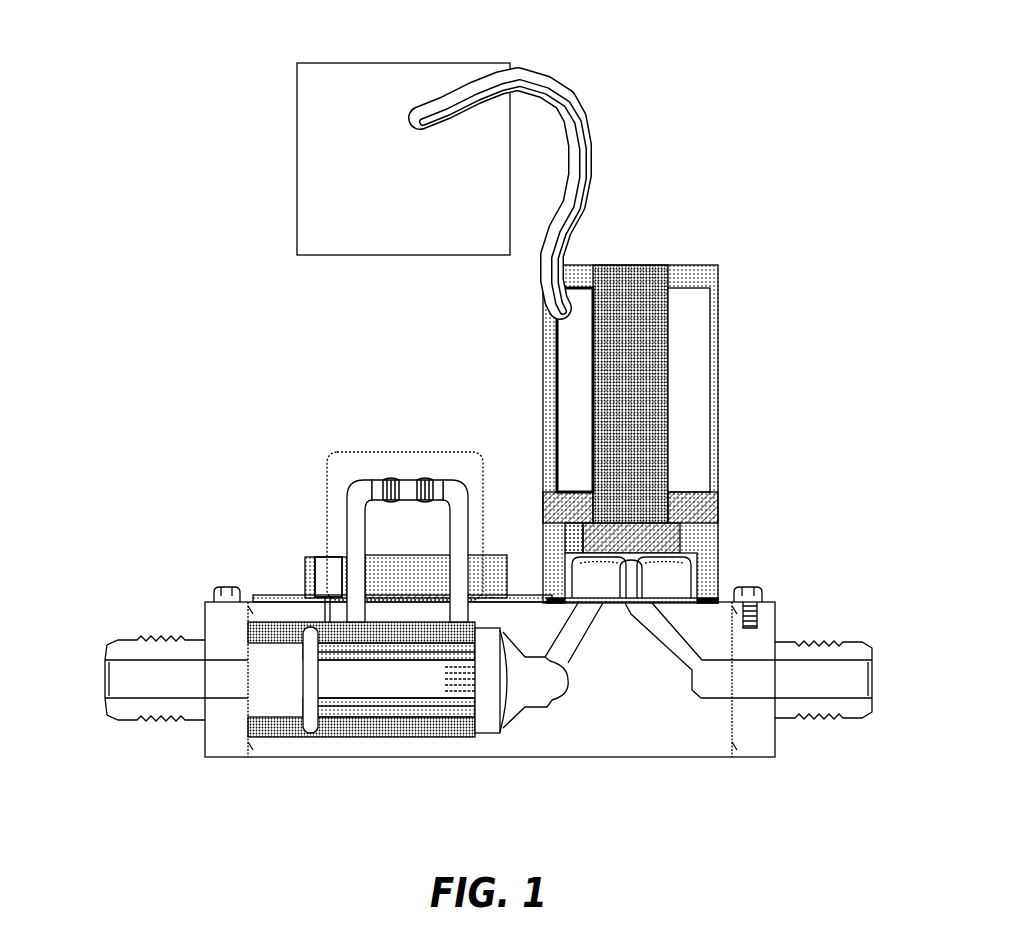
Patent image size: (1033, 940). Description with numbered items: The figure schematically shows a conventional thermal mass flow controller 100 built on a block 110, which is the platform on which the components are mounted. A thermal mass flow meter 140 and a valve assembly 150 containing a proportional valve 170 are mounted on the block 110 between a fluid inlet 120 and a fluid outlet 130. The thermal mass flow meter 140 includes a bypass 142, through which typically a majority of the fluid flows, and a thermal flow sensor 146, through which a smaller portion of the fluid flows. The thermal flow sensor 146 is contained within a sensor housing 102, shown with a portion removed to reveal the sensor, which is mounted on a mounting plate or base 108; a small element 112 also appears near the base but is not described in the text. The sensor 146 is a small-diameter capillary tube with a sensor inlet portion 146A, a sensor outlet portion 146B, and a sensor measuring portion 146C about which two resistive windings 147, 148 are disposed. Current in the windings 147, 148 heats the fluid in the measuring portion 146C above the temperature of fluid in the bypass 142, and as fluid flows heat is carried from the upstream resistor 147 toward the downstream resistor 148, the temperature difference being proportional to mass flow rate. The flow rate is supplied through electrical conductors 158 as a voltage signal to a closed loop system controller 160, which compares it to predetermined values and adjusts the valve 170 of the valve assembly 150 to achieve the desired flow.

The mass flow controller 100 is at (212, 188).
The sensor housing 102 is at (327, 492).
The mounting plate or base 108 is at (308, 582).
The block 110 is at (620, 737).
The fastener / standoff 112 is at (316, 565).
The fluid inlet 120 is at (107, 688).
The fluid outlet 130 is at (862, 685).
The thermal mass flow meter 140 is at (268, 400).
The bypass 142 is at (388, 698).
The thermal flow sensor 146 is at (453, 458).
The sensor inlet portion 146A is at (358, 532).
The sensor outlet portion 146B is at (462, 533).
The sensor measuring portion 146C is at (405, 482).
The upstream resistive winding 147 is at (384, 487).
The downstream resistive winding 148 is at (436, 490).
The valve assembly 150 is at (650, 265).
The electrical conductors 158 is at (582, 108).
The closed loop system controller 160 is at (320, 62).
The valve 170 is at (640, 549).